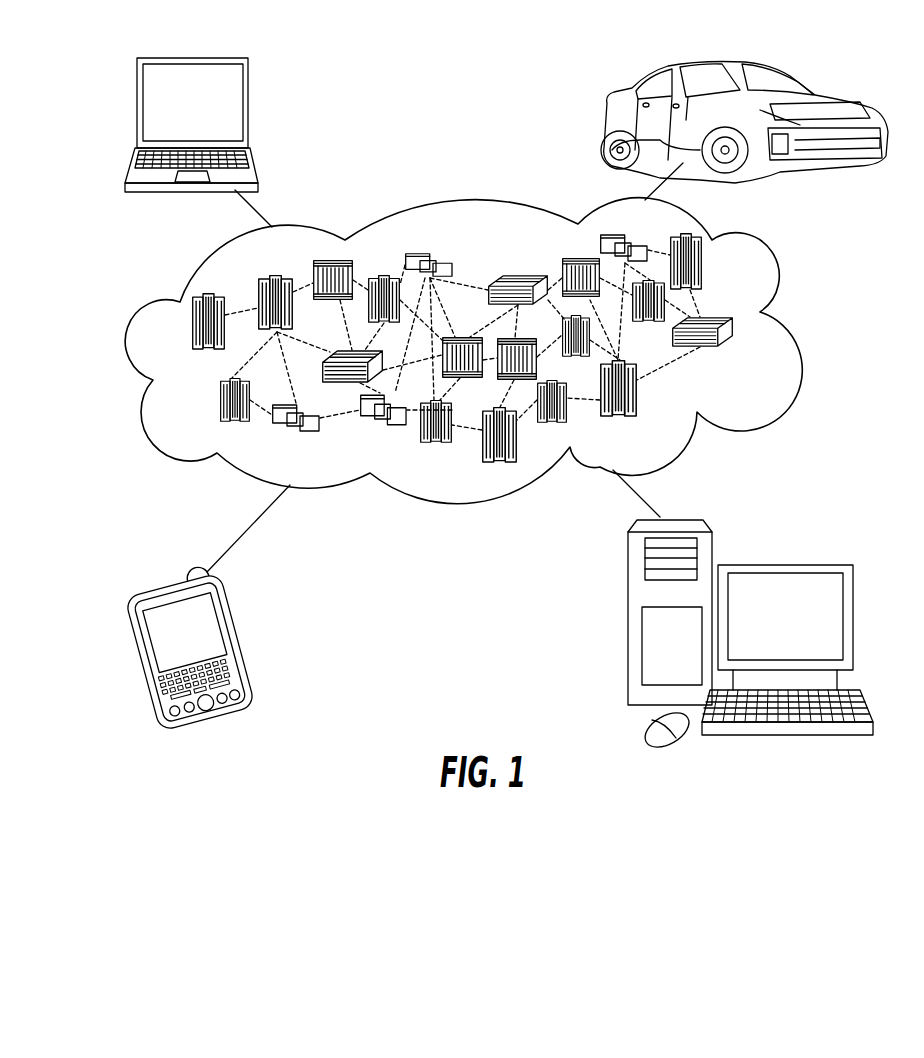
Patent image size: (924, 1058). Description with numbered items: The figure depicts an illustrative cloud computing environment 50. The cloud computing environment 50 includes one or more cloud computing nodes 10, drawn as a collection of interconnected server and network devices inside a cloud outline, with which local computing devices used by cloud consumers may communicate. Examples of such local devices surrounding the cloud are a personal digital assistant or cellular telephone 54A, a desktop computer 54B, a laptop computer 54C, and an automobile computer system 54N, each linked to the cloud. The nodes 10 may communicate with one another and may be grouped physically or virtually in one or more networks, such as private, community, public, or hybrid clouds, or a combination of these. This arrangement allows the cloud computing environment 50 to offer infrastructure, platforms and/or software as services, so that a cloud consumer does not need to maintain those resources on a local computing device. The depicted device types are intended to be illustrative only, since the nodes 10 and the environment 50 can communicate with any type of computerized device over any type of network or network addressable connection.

The cloud computing node 10 is at (805, 323).
The cloud computing environment 50 is at (480, 351).
The personal digital assistant or cellular telephone 54A is at (242, 640).
The desktop computer 54B is at (783, 563).
The laptop computer 54C is at (248, 109).
The automobile computer system 54N is at (603, 123).